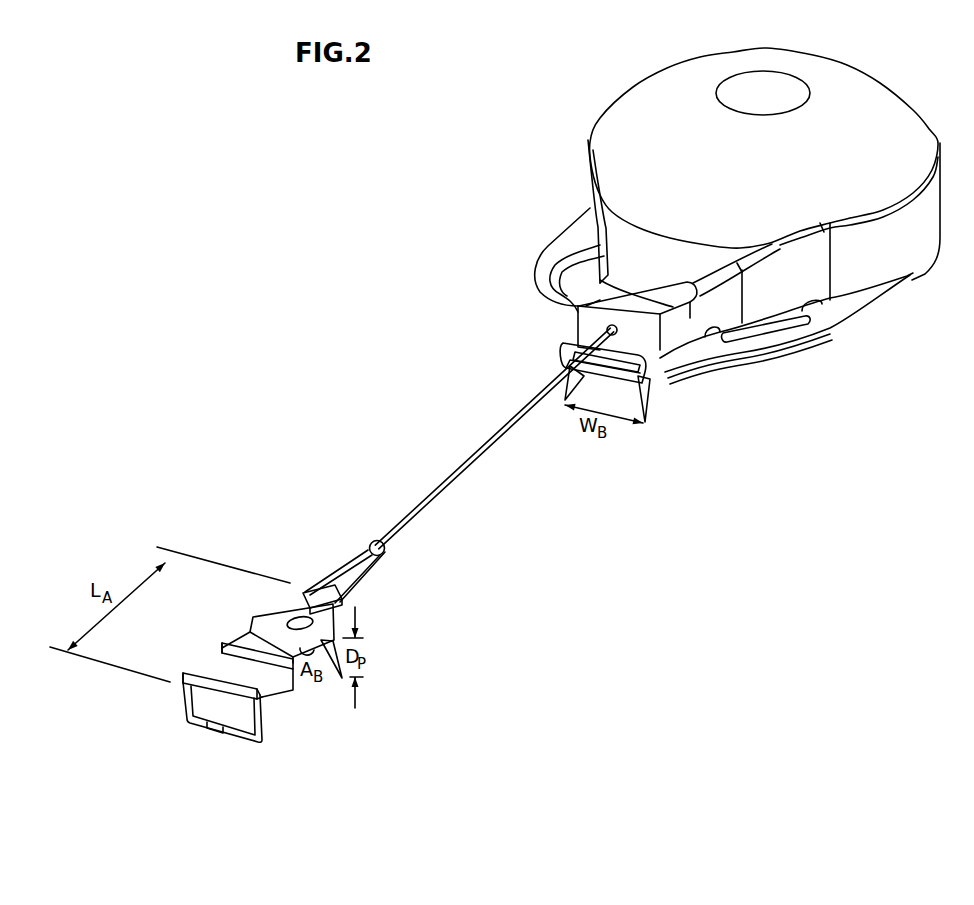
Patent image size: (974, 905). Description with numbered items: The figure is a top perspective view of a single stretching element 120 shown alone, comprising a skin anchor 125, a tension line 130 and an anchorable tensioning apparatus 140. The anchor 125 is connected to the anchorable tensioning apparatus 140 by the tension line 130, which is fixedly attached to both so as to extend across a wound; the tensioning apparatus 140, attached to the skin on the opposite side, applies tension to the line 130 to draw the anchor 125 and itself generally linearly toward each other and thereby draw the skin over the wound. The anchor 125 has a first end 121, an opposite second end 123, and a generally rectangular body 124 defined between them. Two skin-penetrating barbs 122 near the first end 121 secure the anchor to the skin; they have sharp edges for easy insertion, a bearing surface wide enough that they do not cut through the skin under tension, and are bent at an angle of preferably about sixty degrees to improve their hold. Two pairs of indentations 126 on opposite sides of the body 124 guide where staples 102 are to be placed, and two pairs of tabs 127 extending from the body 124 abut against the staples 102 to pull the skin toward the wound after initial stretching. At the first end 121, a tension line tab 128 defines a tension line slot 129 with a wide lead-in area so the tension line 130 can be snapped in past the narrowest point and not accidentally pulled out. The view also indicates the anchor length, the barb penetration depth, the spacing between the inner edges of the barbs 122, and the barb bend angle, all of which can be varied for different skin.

The staple 102 is at (441, 591).
The stretching element 120 is at (715, 490).
The first end 121 is at (338, 588).
The skin-penetrating barbs 122 is at (645, 422).
The second end 123 is at (217, 709).
The body 124 is at (253, 680).
The skin anchor 125 is at (278, 612).
The indentations 126 is at (250, 637).
The tabs 127 is at (222, 657).
The tension line tab 128 is at (612, 385).
The tension line slot 129 is at (604, 378).
The tension line 130 is at (457, 471).
The anchorable tensioning apparatus 140 is at (773, 372).